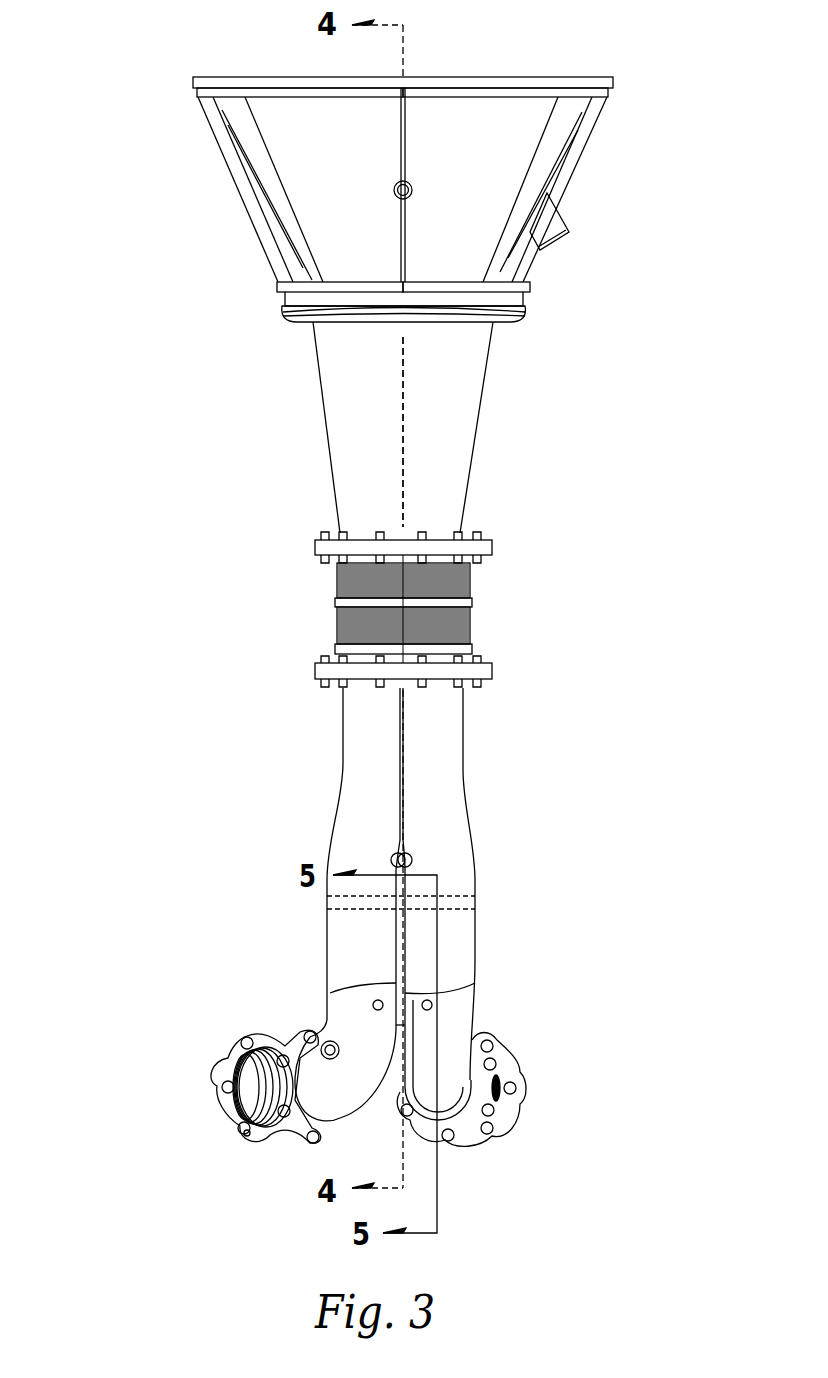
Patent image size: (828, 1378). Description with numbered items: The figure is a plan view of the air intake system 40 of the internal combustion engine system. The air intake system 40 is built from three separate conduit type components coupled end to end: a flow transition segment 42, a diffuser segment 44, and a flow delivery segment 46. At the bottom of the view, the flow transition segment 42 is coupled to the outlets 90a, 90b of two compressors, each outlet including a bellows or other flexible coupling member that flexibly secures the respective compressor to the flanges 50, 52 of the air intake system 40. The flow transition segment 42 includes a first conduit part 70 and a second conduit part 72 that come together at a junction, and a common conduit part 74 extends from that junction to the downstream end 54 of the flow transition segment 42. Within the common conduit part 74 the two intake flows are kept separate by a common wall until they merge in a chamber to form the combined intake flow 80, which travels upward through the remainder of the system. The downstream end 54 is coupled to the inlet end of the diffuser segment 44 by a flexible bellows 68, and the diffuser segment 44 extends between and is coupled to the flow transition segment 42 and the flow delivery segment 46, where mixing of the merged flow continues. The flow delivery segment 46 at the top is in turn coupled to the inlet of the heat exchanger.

The air intake system 40 is at (188, 379).
The flow transition segment 42 is at (466, 798).
The diffuser segment 44 is at (474, 462).
The flow delivery segment 46 is at (574, 182).
The flange 50 is at (503, 1063).
The flange 52 is at (262, 1087).
The downstream end of flow transition segment 54 is at (317, 670).
The flexible bellows 68 is at (472, 627).
The first conduit part 70 is at (475, 983).
The second conduit part 72 is at (333, 975).
The common conduit part 74 is at (343, 763).
The combined intake flow 80 is at (403, 380).
The compressor outlet 90a is at (503, 1093).
The compressor outlet 90b is at (250, 1137).